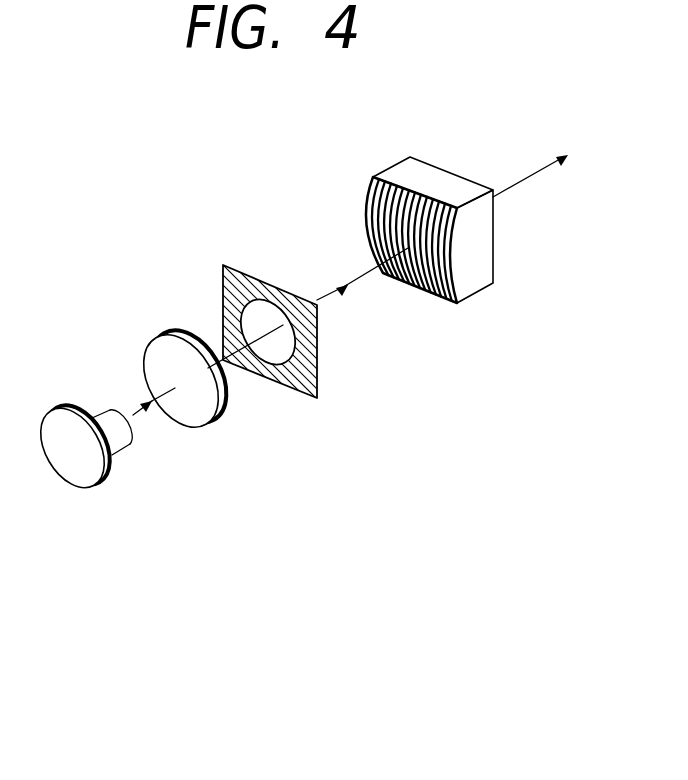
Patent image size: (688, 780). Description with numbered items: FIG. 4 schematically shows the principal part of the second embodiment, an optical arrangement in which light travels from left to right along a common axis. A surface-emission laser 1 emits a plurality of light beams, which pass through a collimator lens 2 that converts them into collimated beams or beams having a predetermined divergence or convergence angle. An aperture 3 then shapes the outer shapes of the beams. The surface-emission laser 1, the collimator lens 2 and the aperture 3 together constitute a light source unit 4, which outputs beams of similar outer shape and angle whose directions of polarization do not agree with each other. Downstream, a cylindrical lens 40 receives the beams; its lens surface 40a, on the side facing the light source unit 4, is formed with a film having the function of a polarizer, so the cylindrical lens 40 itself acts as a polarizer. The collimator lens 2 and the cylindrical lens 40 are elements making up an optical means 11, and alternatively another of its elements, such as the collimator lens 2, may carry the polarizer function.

The surface-emission laser 1 is at (93, 486).
The collimator lens 2 is at (198, 423).
The aperture 3 is at (291, 392).
The light source unit 4 is at (353, 433).
The optical means 11 is at (407, 115).
The cylindrical lens 40 is at (463, 268).
The lens surface 40a is at (430, 297).